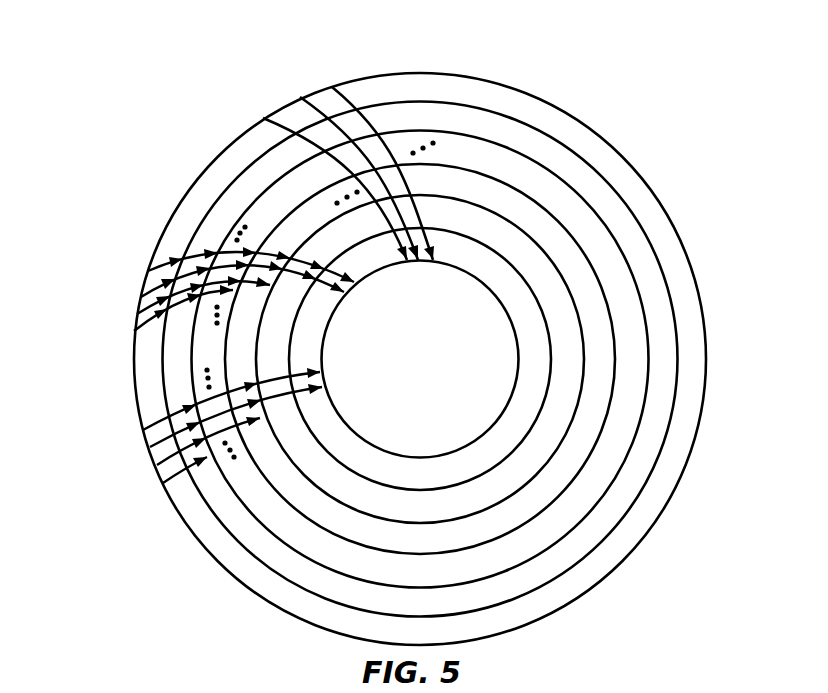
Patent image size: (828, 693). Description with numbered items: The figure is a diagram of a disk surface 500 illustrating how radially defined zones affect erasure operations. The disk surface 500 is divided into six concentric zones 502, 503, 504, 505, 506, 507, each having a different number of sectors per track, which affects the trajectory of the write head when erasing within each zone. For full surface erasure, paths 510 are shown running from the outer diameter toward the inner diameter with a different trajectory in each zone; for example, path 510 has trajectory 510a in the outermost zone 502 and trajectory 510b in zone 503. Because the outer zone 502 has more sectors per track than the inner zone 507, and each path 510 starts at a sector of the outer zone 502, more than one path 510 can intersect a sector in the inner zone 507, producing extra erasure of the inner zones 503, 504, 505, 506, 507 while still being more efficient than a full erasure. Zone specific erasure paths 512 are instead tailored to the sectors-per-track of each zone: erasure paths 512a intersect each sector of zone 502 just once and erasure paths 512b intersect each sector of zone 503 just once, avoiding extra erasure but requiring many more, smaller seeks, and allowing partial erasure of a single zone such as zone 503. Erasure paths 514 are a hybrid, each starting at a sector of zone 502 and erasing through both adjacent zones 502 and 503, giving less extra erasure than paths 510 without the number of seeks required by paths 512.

The disk surface 500 is at (110, 107).
The zone 502 is at (587, 147).
The zone 503 is at (582, 180).
The zone 504 is at (573, 217).
The zone 505 is at (567, 259).
The zone 506 is at (557, 303).
The zone 507 is at (530, 358).
The path 510 is at (290, 95).
The trajectory 510a is at (347, 96).
The trajectory 510b is at (380, 120).
The zone specific erasure path 512 is at (203, 244).
The erasure path 512a is at (152, 250).
The erasure path 512b is at (198, 243).
The erasure path 514 is at (130, 412).